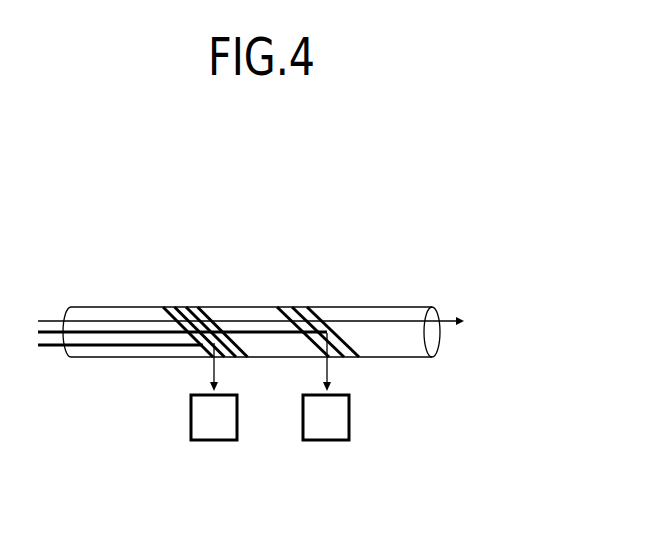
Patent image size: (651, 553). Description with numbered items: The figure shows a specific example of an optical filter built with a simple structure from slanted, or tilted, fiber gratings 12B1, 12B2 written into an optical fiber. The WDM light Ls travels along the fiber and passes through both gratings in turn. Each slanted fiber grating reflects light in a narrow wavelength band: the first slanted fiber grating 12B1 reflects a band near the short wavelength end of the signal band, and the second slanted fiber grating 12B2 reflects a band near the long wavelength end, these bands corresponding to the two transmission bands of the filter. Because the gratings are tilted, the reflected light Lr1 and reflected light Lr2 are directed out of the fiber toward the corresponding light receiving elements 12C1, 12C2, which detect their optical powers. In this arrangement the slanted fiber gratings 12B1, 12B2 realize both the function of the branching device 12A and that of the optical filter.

The branching device 12A is at (251, 332).
The slanted fiber grating 12B1 is at (183, 303).
The slanted fiber grating 12B2 is at (304, 307).
The light receiving element 12C1 is at (202, 442).
The light receiving element 12C2 is at (327, 442).
The WDM light Ls is at (265, 319).
The reflected light Lr1 is at (190, 367).
The reflected light Lr2 is at (346, 362).